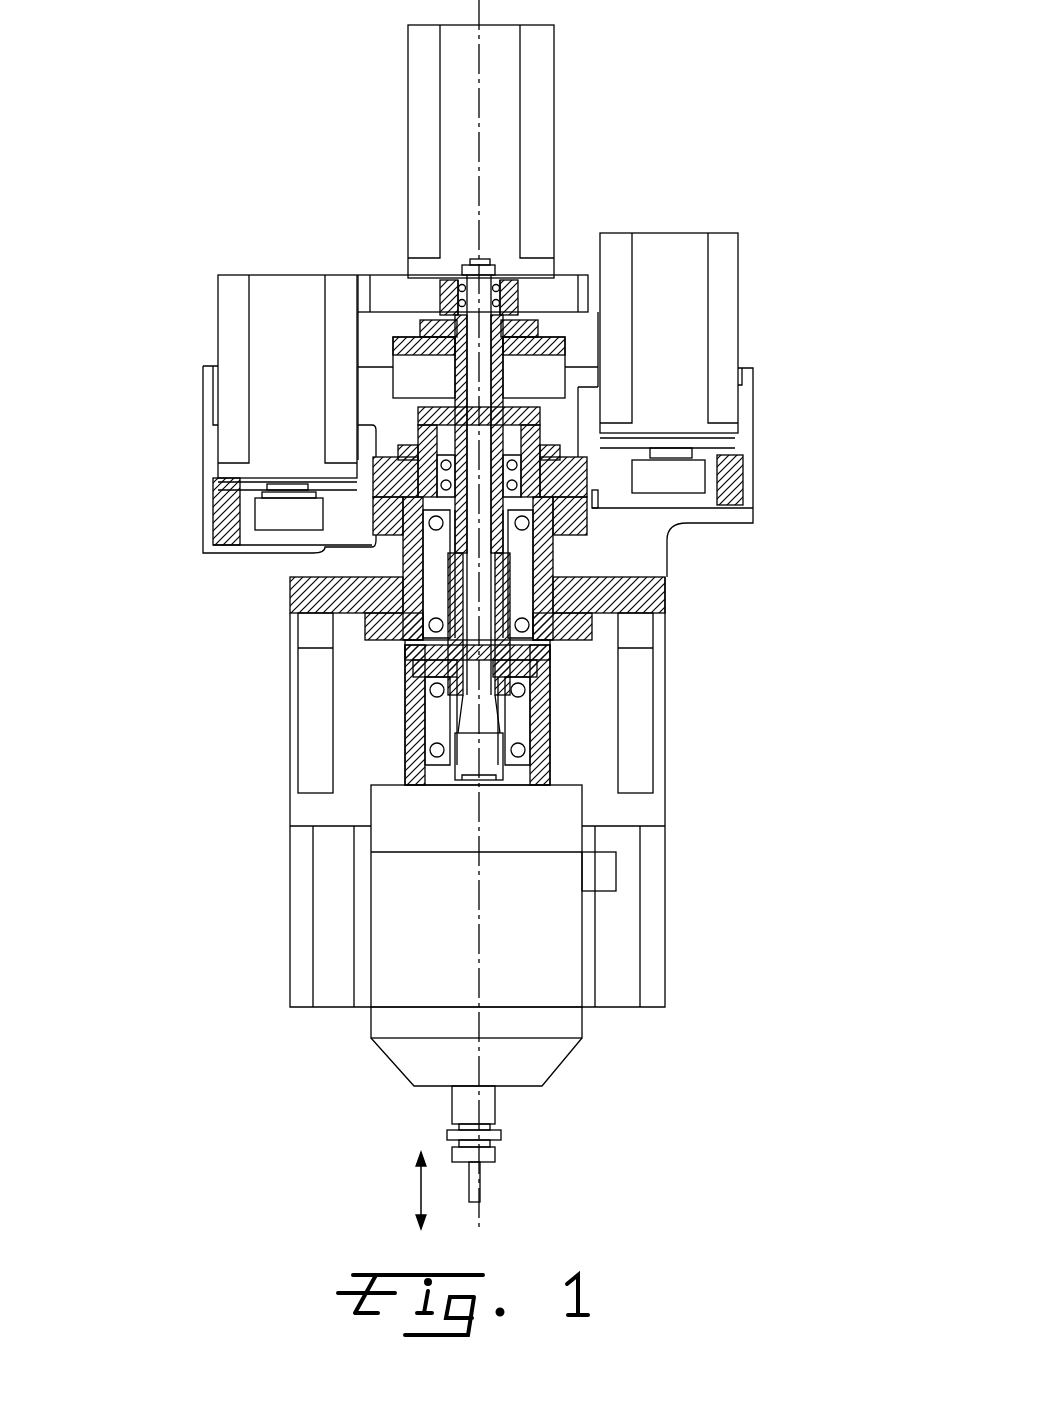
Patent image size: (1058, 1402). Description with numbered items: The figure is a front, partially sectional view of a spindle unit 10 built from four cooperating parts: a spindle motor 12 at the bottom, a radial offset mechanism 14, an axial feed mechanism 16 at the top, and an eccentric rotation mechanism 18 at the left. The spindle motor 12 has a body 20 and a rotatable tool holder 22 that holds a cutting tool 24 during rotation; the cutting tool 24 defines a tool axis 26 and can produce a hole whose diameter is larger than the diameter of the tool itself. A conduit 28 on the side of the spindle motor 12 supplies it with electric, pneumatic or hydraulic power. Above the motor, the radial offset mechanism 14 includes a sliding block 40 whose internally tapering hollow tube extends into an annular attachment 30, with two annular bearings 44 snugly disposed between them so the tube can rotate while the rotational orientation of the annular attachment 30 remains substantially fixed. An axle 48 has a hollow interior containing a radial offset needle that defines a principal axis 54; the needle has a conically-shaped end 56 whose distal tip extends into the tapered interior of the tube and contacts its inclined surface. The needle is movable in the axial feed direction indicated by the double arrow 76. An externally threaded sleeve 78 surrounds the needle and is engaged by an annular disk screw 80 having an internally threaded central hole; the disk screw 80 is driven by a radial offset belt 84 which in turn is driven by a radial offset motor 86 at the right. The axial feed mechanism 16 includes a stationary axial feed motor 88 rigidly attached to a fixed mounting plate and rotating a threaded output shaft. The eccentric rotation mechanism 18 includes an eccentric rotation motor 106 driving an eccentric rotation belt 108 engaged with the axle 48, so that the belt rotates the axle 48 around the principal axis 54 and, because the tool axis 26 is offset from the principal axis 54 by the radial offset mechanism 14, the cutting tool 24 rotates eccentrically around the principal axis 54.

The spindle unit 10 is at (745, 178).
The spindle motor 12 is at (337, 1050).
The radial offset mechanism 14 is at (765, 297).
The axial feed mechanism 16 is at (385, 93).
The eccentric rotation mechanism 18 is at (225, 243).
The body 20 is at (542, 1060).
The rotatable tool holder 22 is at (488, 1152).
The cutting tool 24 is at (480, 1185).
The tool axis 26 is at (480, 948).
The conduit 28 is at (605, 873).
The annular attachment 30 is at (413, 723).
The sliding block 40 is at (555, 670).
The annular bearings 44 is at (513, 750).
The axle 48 is at (433, 583).
The principal axis 54 is at (505, 380).
The conically-shaped end 56 is at (493, 790).
The double arrow 76 is at (421, 1190).
The externally threaded sleeve 78 is at (547, 365).
The disk screw 80 is at (420, 422).
The radial offset belt 84 is at (625, 490).
The radial offset motor 86 is at (727, 245).
The axial feed motor 88 is at (545, 63).
The eccentric rotation motor 106 is at (230, 295).
The eccentric rotation belt 108 is at (343, 520).